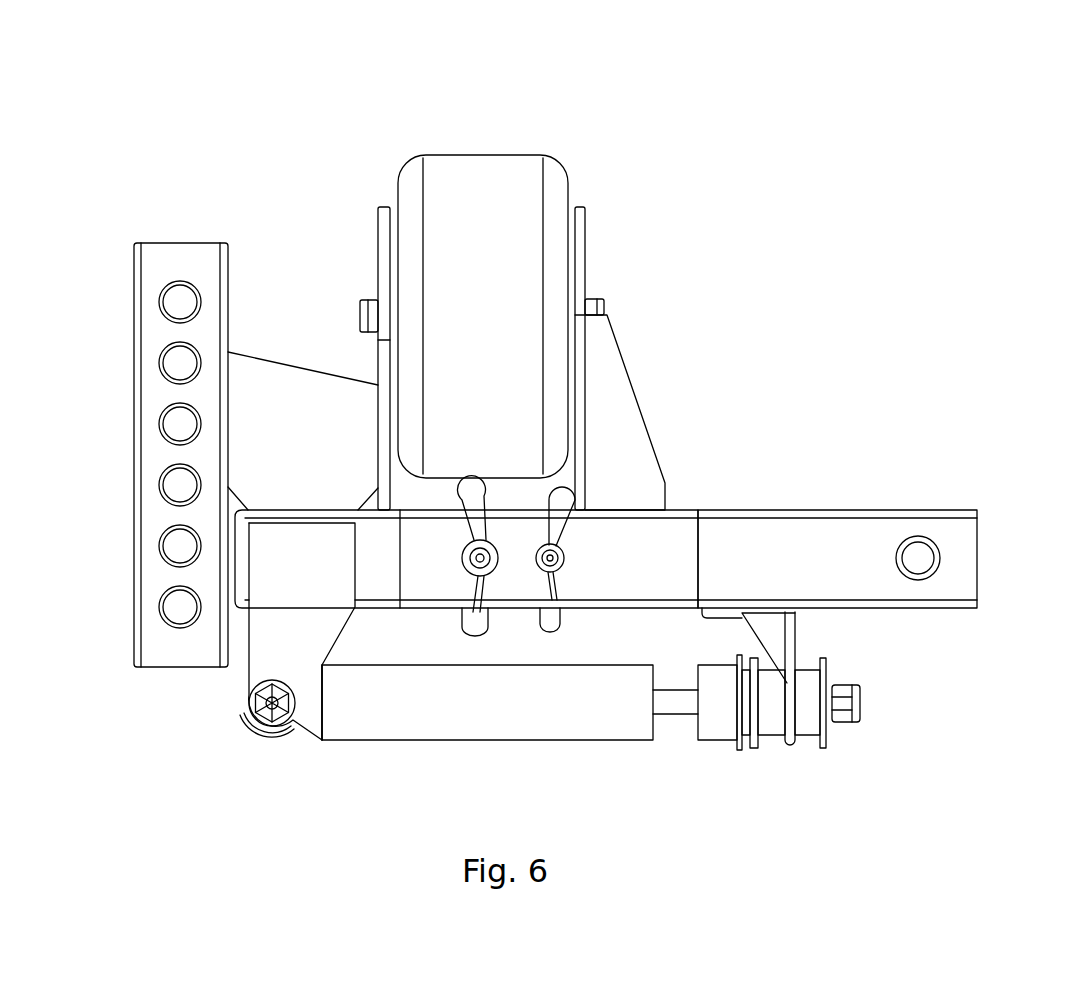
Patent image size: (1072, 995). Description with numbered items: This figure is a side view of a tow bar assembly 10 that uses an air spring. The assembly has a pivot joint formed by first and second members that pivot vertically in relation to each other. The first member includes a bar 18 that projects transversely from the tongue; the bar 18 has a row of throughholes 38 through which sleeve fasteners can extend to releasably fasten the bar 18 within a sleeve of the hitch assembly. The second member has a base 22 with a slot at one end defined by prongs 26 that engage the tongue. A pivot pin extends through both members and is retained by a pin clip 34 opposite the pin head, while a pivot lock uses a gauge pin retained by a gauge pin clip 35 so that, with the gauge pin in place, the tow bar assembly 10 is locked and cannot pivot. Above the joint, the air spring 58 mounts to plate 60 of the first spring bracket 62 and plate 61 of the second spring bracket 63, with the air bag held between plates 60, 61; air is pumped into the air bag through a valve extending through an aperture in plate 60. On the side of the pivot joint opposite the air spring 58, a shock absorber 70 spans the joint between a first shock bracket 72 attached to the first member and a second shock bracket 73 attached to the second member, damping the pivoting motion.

The tow bar assembly 10 is at (277, 130).
The bar 18 is at (157, 339).
The throughholes 38 is at (158, 542).
The pin clip 34 is at (455, 506).
The first spring bracket 62 is at (275, 398).
The plate 60 is at (383, 212).
The air spring 58 is at (485, 185).
The plate 61 is at (590, 222).
The second spring bracket 63 is at (612, 397).
The gauge pin clip 35 is at (585, 490).
The prongs 26 is at (640, 535).
The base 22 is at (950, 580).
The second shock bracket 73 is at (780, 625).
The shock absorber 70 is at (585, 710).
The first shock bracket 72 is at (300, 650).